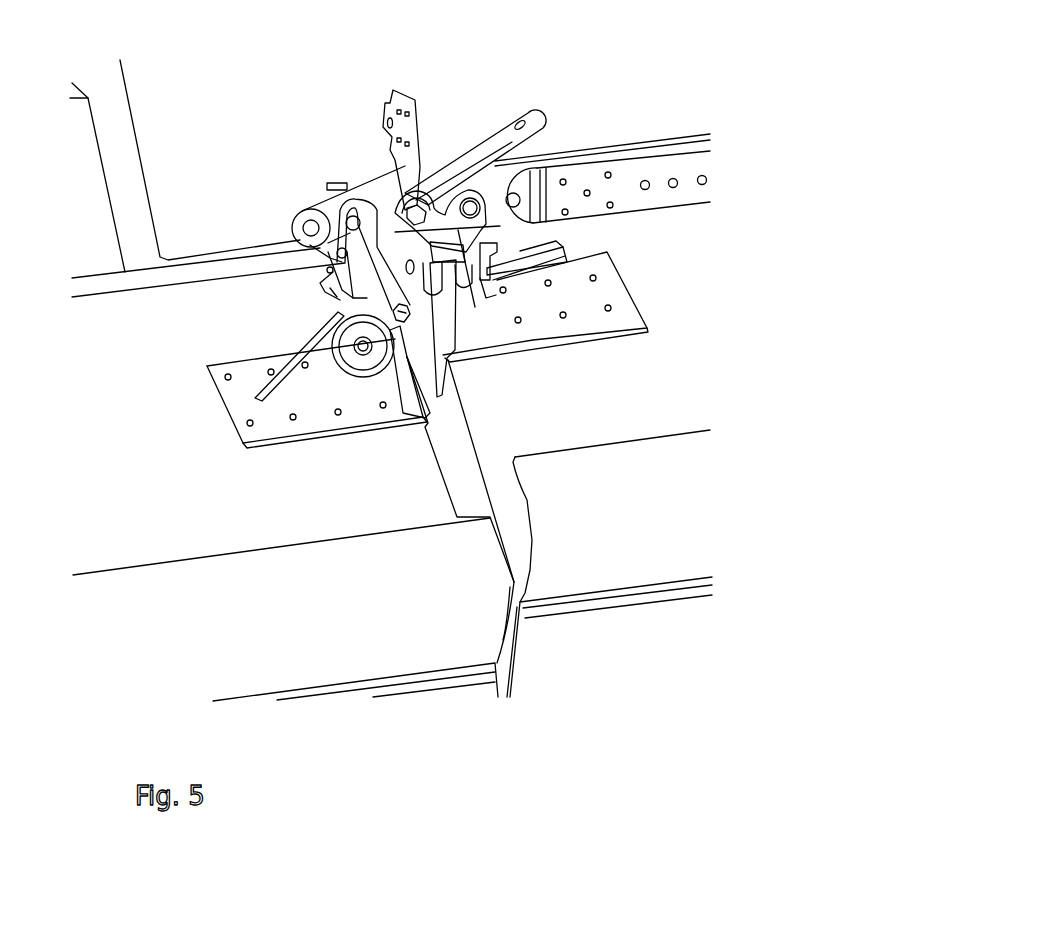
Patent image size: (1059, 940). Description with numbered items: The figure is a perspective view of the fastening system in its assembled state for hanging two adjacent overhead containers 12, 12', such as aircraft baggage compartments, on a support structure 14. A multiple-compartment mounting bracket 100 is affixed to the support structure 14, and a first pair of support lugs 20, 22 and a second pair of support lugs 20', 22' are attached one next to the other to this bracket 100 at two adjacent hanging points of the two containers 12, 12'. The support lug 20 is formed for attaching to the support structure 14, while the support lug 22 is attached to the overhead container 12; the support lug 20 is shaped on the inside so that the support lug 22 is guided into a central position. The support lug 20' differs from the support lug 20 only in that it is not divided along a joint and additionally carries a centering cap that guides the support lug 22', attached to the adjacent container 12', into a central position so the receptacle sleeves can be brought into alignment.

The multiple-compartment mounting bracket 100 is at (432, 167).
The support structure 14 is at (578, 182).
The support lug 20 is at (378, 209).
The support lug 22 is at (318, 292).
The support lug 20' is at (559, 313).
The support lug 22' is at (527, 417).
The overhead container 12 is at (293, 646).
The overhead container 12' is at (609, 596).